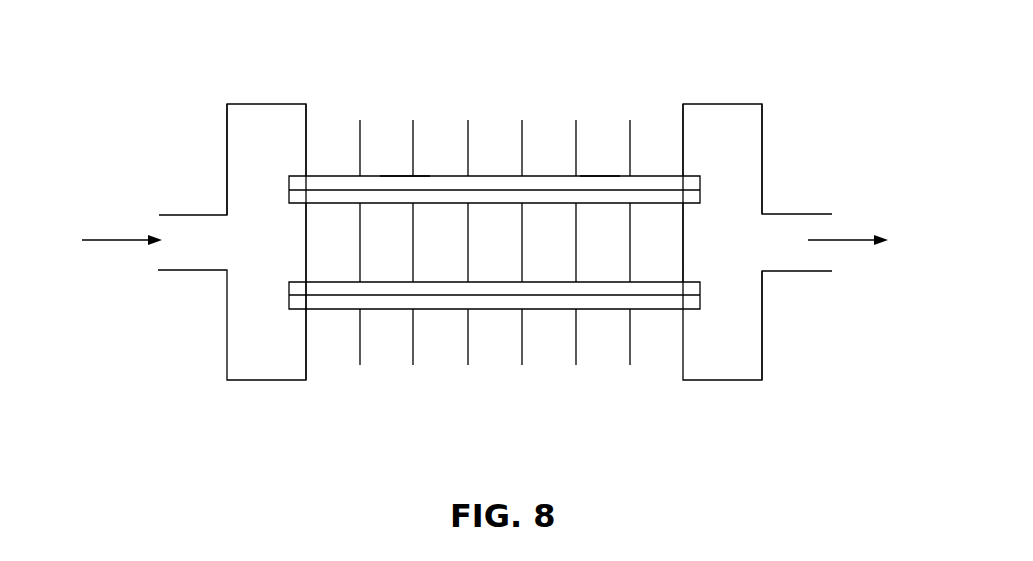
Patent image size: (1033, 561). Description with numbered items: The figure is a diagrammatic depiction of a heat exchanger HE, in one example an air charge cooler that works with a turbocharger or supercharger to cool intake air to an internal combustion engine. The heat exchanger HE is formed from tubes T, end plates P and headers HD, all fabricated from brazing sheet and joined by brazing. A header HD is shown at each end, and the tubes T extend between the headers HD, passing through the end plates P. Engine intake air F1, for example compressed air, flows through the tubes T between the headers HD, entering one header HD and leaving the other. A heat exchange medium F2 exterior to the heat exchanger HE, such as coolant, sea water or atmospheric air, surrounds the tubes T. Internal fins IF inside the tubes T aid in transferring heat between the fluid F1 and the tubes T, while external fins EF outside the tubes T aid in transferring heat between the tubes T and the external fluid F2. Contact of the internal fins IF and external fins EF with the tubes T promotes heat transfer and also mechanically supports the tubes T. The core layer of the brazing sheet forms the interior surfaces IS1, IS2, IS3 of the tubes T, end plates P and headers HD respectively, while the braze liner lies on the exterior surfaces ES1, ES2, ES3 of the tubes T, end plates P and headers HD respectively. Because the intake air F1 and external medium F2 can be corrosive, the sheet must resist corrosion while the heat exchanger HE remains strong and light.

The heat exchanger HE is at (493, 231).
The header HD is at (227, 131).
The tube T is at (542, 176).
The internal fin IF is at (433, 189).
The external fin EF is at (468, 348).
The end plate P is at (683, 241).
The exterior surface of tube ES1 is at (403, 176).
The exterior surface of end plate ES2 is at (307, 120).
The exterior surface of header ES3 is at (763, 303).
The interior surface of tube IS1 is at (589, 175).
The interior surface of end plate IS2 is at (683, 148).
The interior surface of header IS3 is at (228, 173).
The engine intake air F1 is at (490, 240).
The heat exchange medium F2 is at (510, 105).